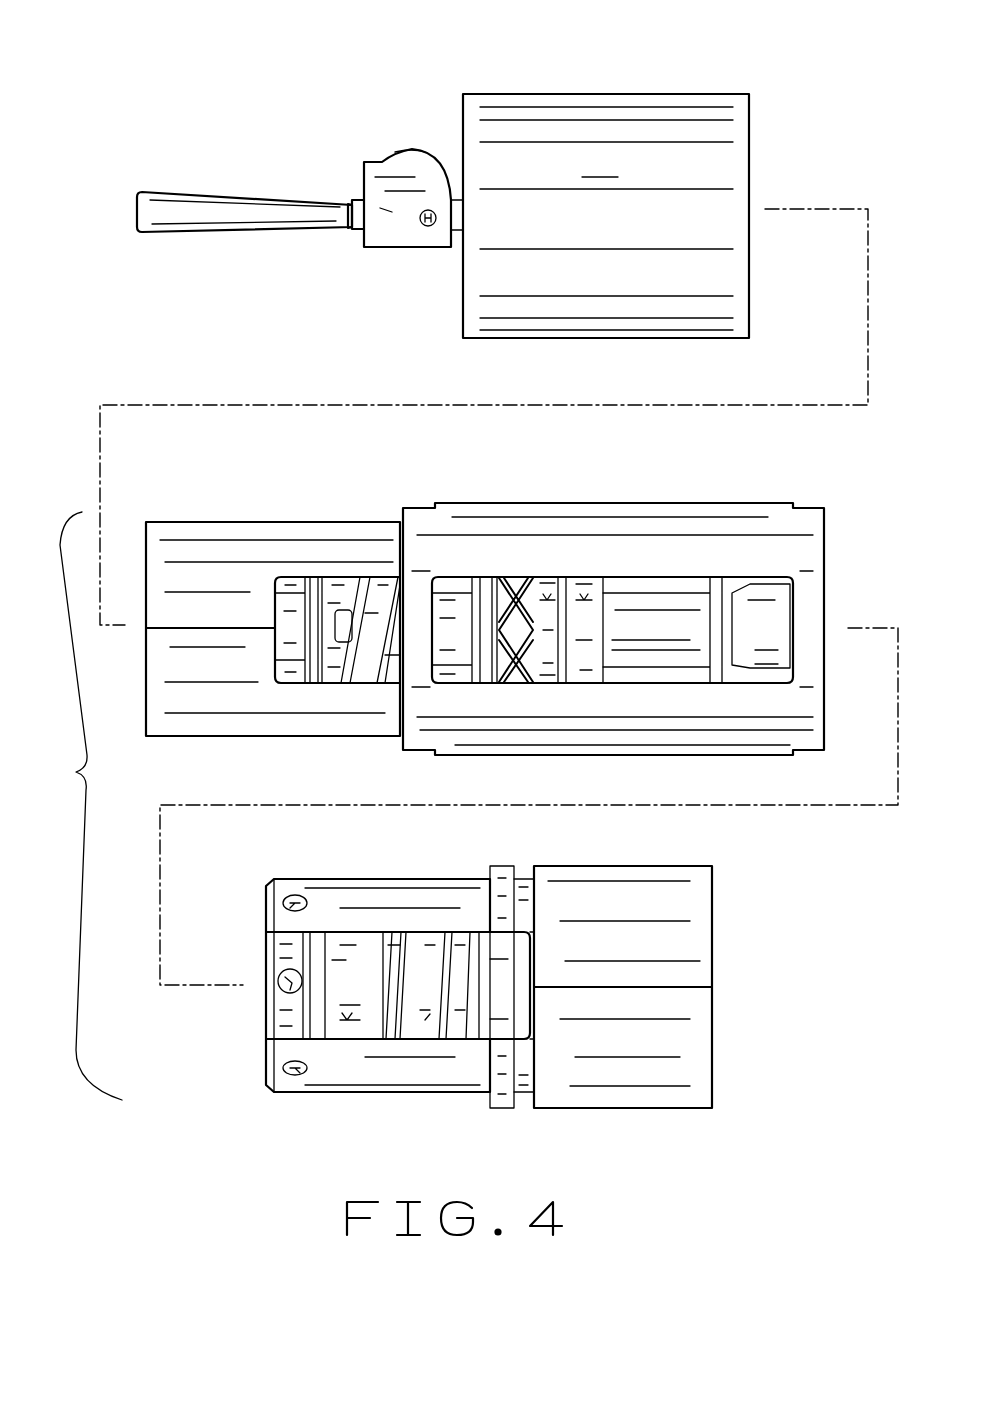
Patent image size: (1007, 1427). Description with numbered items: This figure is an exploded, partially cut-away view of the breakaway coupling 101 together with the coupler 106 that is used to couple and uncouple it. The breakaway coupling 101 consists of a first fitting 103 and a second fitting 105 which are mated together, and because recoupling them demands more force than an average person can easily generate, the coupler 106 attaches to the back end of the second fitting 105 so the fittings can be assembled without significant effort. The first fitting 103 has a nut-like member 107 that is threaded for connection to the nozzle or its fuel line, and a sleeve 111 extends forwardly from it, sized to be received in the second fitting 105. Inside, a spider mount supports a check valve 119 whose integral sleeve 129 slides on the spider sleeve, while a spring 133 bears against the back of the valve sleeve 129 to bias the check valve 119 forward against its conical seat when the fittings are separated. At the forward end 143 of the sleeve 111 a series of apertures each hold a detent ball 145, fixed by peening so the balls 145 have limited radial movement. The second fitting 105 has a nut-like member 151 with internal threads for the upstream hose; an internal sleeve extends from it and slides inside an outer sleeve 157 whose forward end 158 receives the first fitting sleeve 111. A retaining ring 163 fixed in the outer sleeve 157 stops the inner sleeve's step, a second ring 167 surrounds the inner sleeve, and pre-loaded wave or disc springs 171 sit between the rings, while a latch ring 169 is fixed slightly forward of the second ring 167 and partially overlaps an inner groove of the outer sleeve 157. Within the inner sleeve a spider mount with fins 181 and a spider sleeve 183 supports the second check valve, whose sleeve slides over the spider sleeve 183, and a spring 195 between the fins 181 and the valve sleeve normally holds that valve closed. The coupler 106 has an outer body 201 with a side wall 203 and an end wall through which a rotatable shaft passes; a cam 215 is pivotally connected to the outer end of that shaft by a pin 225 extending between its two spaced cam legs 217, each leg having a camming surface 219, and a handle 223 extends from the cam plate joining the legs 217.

The breakaway coupling 101 is at (463, 586).
The first fitting 103 is at (571, 848).
The second fitting 105 is at (680, 490).
The coupler 106 is at (580, 66).
The nut-like member 107 is at (680, 866).
The sleeve 111 is at (377, 878).
The check valve 119 is at (350, 1022).
The integral sleeve 129 is at (425, 1020).
The spring 133 is at (307, 1020).
The forward end 143 is at (262, 1054).
The detent balls 145 is at (293, 895).
The nut-like member 151 is at (182, 522).
The outer sleeve 157 is at (773, 503).
The forward end 158 is at (826, 549).
The retaining ring 163 is at (477, 575).
The second ring 167 is at (547, 593).
The latch ring 169 is at (583, 587).
The wave or disc springs 171 is at (503, 580).
The fins 181 is at (293, 585).
The spider sleeve 183 is at (337, 590).
The spring 195 is at (358, 590).
The outer body 201 is at (666, 92).
The side wall 203 is at (600, 164).
The cam 215 is at (384, 143).
The cam legs 217 is at (388, 213).
The camming surface 219 is at (413, 150).
The handle 223 is at (212, 192).
The pin 225 is at (428, 228).